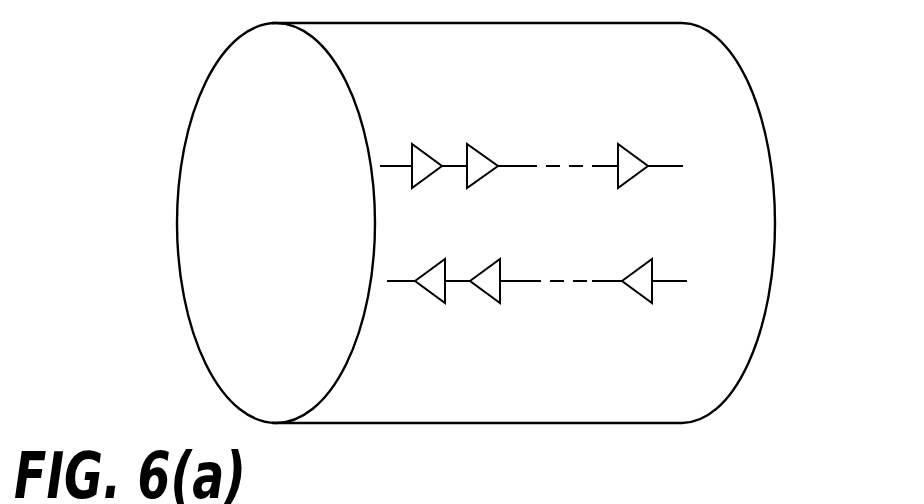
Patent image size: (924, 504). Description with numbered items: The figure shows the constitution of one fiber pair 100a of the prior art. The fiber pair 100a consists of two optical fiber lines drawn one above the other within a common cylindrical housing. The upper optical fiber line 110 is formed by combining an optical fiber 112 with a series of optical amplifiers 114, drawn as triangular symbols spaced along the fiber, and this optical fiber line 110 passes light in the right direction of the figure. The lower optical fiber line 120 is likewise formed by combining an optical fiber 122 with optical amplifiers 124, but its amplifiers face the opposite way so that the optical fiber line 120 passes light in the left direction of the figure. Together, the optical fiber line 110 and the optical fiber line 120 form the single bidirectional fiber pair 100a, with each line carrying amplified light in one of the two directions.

The fiber pair 100a is at (765, 132).
The optical fiber line 110 is at (551, 129).
The optical fiber 112 is at (392, 166).
The optical amplifiers 114 is at (427, 156).
The optical fiber line 120 is at (562, 297).
The optical fiber 122 is at (402, 282).
The optical amplifiers 124 is at (430, 292).